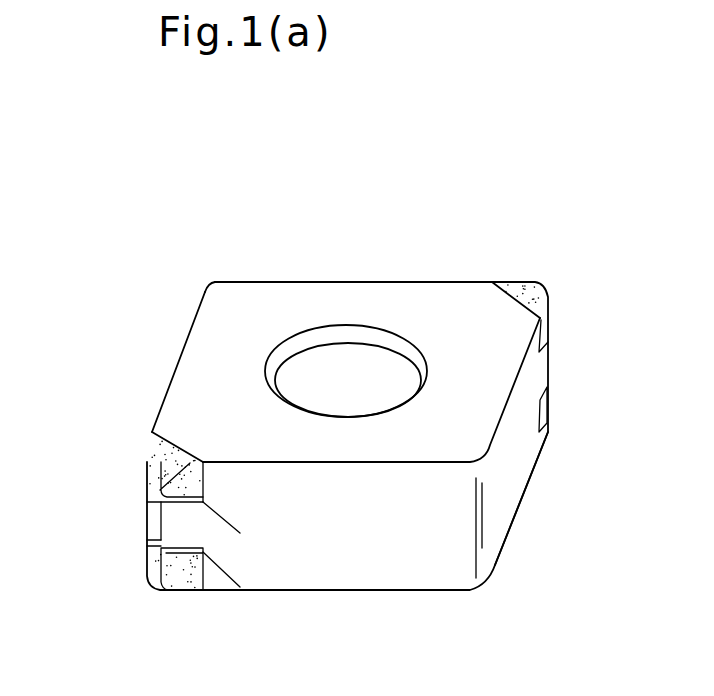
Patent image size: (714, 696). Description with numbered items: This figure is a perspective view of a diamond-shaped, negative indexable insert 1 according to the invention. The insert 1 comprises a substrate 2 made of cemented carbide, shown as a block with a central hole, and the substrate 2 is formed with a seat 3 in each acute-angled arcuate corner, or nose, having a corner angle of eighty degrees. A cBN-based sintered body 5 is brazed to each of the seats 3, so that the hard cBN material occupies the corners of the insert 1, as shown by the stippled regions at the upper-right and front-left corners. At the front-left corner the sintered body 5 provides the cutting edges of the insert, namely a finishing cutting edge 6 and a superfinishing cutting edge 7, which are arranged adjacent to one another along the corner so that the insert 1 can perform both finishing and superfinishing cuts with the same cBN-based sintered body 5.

The indexable insert 1 is at (502, 233).
The substrate made of cemented carbide 2 is at (500, 523).
The seat 3 is at (203, 552).
The cBN-based sintered body 5 is at (545, 283).
The finishing cutting edge 6 is at (147, 460).
The superfinishing cutting edge 7 is at (150, 437).